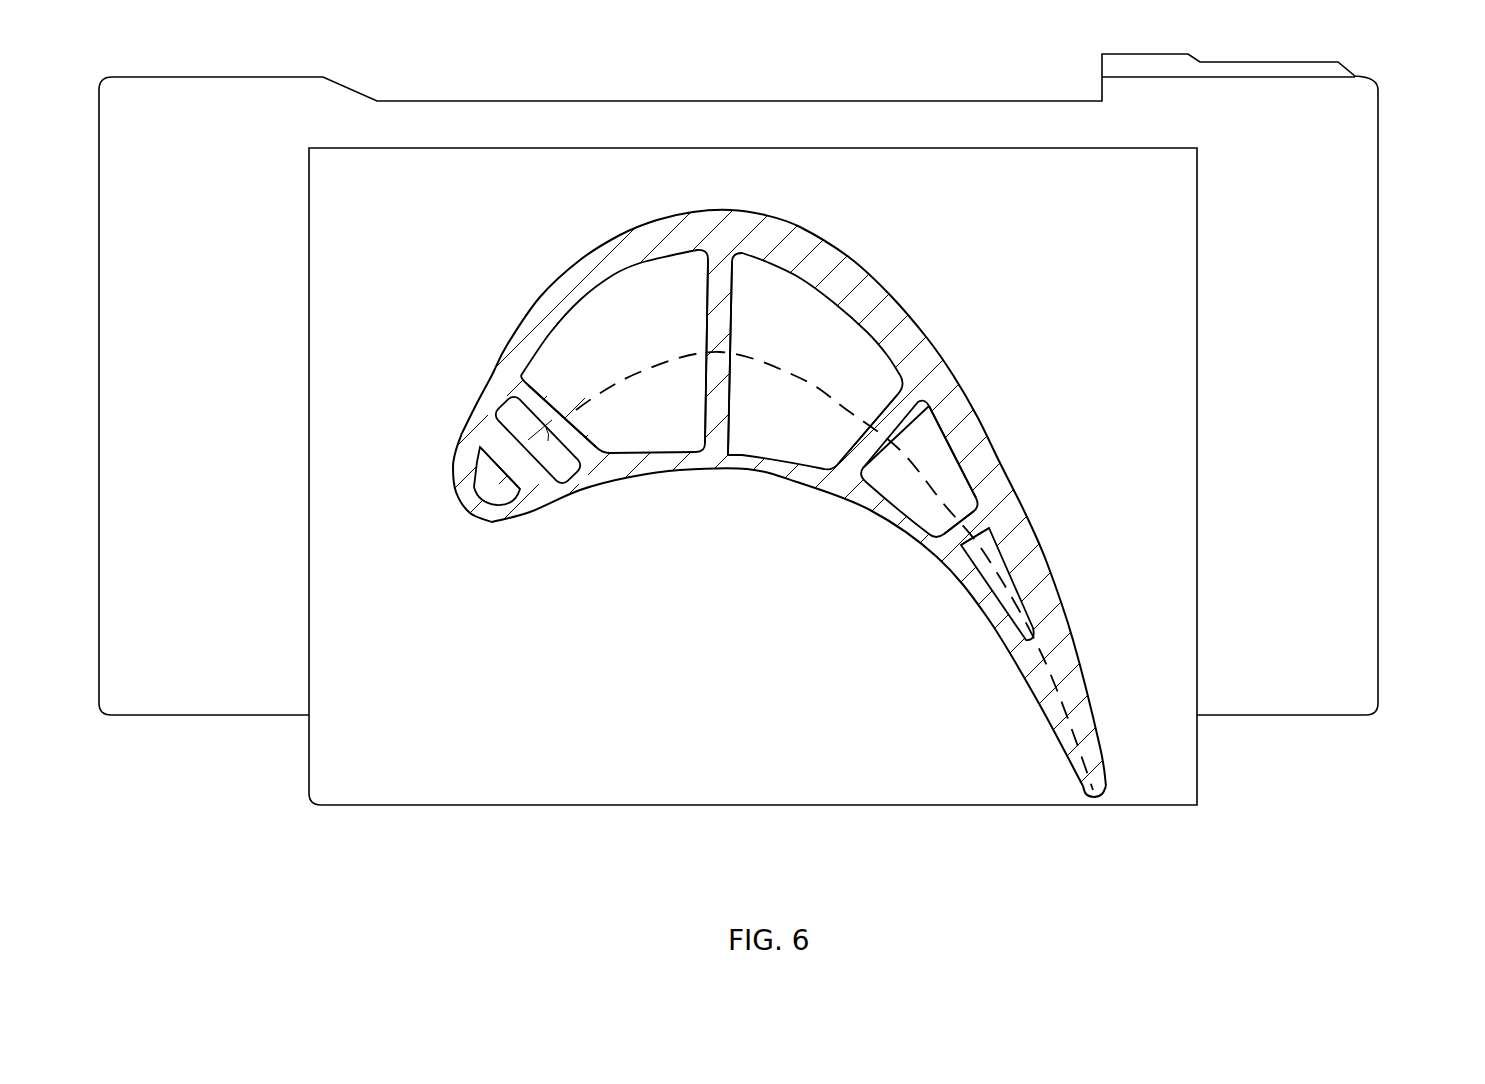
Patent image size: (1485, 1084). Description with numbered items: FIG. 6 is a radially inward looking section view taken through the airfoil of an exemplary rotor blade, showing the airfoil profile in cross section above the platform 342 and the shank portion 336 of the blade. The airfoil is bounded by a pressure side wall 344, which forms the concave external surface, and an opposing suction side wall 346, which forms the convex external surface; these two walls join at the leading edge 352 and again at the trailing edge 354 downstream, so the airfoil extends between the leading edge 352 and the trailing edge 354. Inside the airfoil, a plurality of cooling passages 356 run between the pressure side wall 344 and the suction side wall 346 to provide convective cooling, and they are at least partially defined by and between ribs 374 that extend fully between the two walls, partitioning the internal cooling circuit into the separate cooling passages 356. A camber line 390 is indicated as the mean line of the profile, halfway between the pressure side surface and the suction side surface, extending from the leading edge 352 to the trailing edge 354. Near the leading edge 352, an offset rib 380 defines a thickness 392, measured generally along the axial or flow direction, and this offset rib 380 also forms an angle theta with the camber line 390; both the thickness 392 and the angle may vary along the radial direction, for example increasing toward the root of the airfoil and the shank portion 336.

The shank portion 336 is at (1335, 643).
The platform 342 is at (502, 783).
The pressure side wall 344 is at (793, 485).
The suction side wall 346 is at (973, 413).
The leading edge 352 is at (457, 510).
The trailing edge 354 is at (1094, 797).
The cooling passages 356 is at (1080, 545).
The ribs 374 is at (723, 277).
The offset rib 380 is at (578, 434).
The camber line 390 is at (1000, 488).
The thickness 392 is at (540, 381).